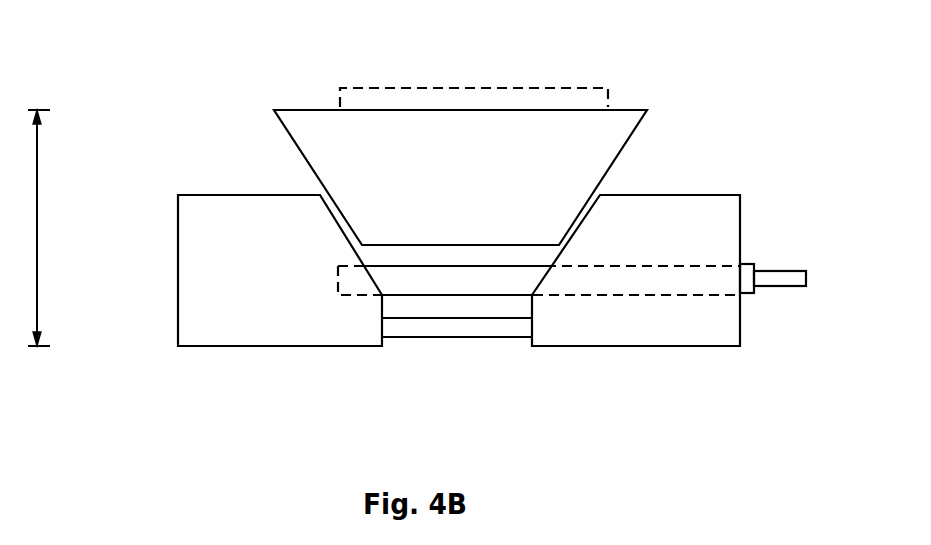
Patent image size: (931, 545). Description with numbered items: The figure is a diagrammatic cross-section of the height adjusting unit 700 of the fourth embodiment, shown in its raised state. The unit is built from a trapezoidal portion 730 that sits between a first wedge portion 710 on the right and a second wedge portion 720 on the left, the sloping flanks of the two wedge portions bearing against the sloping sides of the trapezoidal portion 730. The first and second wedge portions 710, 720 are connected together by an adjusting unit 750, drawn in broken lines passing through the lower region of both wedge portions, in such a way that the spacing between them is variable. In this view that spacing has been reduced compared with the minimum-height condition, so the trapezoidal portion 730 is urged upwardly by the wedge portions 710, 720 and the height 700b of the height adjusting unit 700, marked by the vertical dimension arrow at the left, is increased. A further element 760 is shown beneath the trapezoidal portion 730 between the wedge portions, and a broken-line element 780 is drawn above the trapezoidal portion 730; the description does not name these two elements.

The optical fiber processing assembly 700 is at (421, 227).
The height of assembly 700b is at (64, 228).
The first block 710 is at (683, 210).
The second block 720 is at (238, 207).
The funnel-shaped cavity 730 is at (412, 125).
The heating element 750 is at (705, 278).
The fiber channel 760 is at (470, 338).
The cover 780 is at (605, 85).